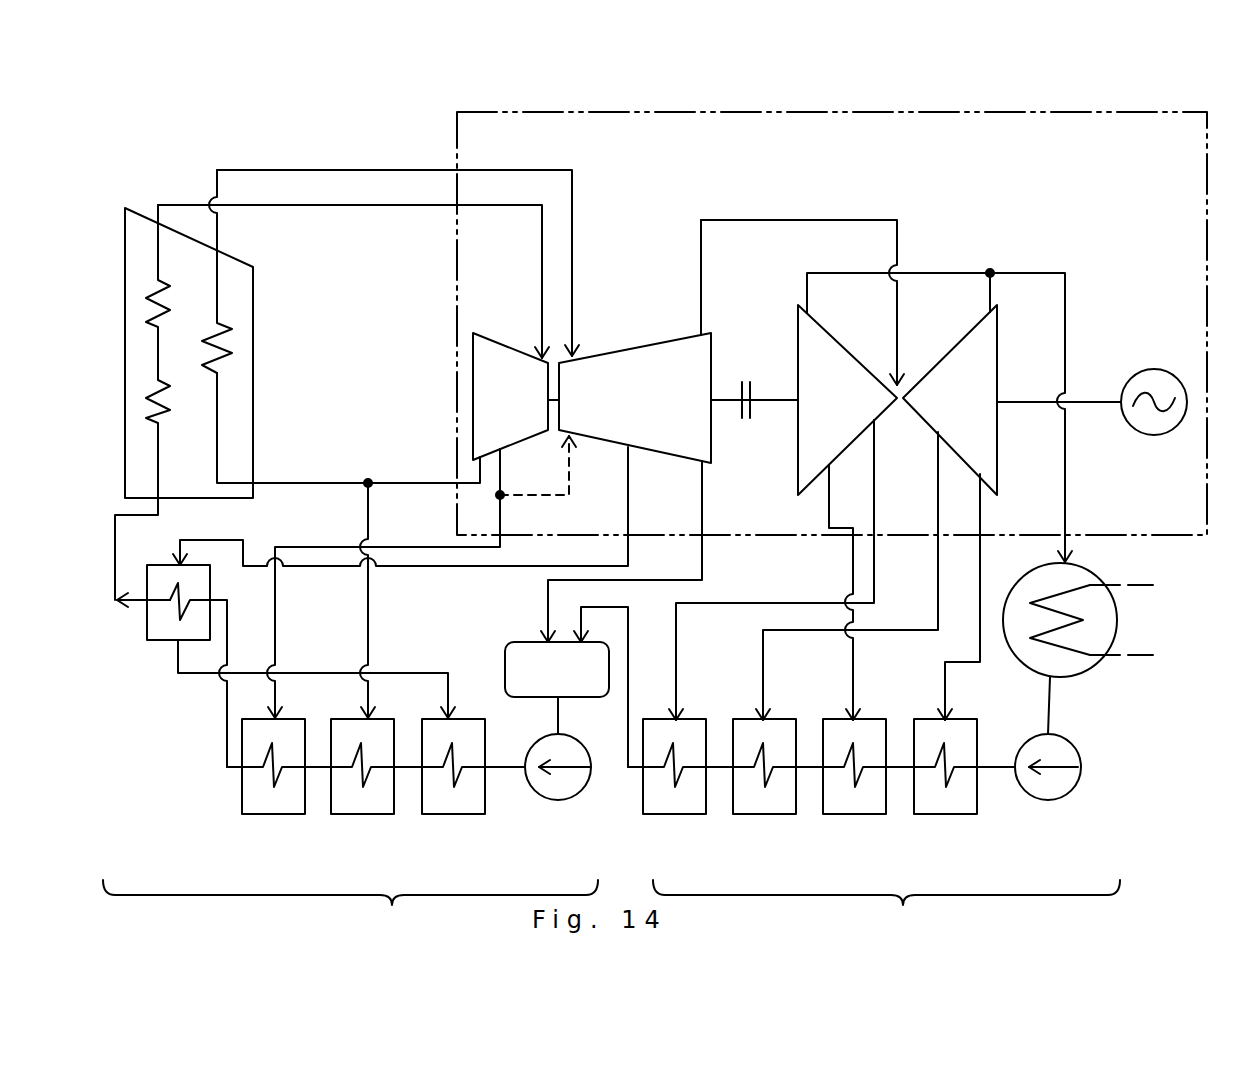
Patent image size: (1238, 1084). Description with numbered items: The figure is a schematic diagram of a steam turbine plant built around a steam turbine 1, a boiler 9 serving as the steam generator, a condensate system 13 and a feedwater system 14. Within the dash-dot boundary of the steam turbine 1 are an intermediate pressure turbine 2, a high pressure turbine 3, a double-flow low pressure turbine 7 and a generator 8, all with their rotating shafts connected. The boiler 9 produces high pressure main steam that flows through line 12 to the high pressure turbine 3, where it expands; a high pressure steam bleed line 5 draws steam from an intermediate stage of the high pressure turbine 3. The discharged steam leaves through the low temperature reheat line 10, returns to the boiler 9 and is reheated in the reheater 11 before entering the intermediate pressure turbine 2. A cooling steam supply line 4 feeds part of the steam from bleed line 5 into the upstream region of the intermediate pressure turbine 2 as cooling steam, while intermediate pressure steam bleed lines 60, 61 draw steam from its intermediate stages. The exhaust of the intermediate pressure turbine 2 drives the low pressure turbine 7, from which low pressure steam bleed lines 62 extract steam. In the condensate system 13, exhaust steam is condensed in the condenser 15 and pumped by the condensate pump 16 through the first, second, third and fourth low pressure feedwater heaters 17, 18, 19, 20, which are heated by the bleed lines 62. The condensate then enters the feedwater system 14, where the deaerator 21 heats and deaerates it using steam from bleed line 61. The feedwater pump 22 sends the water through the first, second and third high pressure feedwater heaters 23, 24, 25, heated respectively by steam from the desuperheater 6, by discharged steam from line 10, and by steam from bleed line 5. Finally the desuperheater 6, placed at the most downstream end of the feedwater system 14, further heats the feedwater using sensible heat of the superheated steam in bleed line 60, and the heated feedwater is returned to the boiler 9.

The steam turbine 1 is at (920, 112).
The intermediate pressure turbine 2 is at (672, 338).
The high pressure turbine 3 is at (500, 340).
The cooling steam supply line 4 is at (569, 477).
The high pressure steam bleed line 5 is at (414, 547).
The desuperheater 6 is at (160, 640).
The low pressure turbine 7 is at (833, 338).
The generator 8 is at (1156, 369).
The boiler 9 is at (133, 205).
The low temperature reheat line 10 is at (414, 483).
The reheater 11 is at (225, 350).
The line 12 is at (363, 207).
The condensate system 13 is at (874, 851).
The feedwater system 14 is at (350, 851).
The condenser 15 is at (1080, 677).
The condensate pump 16 is at (1048, 800).
The first low pressure feedwater heater 17 is at (954, 814).
The second low pressure feedwater heater 18 is at (869, 814).
The third low pressure feedwater heater 19 is at (777, 814).
The fourth low pressure feedwater heater 20 is at (692, 814).
The deaerator 21 is at (605, 697).
The feedwater pump 22 is at (548, 800).
The first high pressure feedwater heater 23 is at (456, 814).
The second high pressure feedwater heater 24 is at (361, 814).
The third high pressure feedwater heater 25 is at (285, 814).
The intermediate pressure steam bleed line 60 is at (476, 566).
The intermediate pressure steam bleed line 61 is at (702, 500).
The low pressure steam bleed lines 62 is at (676, 628).